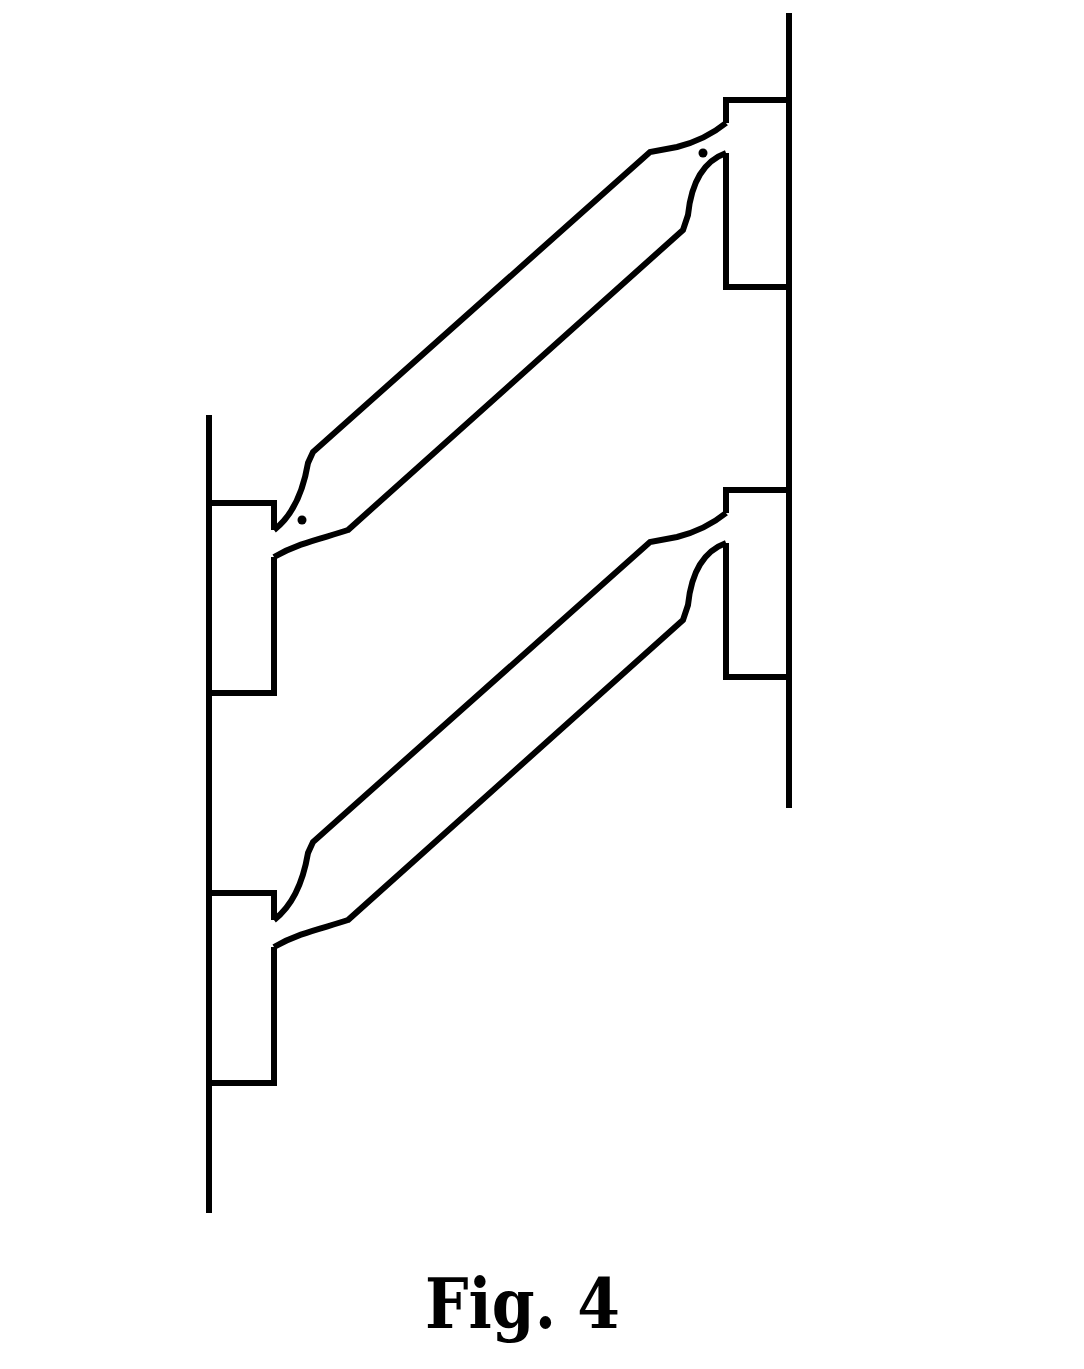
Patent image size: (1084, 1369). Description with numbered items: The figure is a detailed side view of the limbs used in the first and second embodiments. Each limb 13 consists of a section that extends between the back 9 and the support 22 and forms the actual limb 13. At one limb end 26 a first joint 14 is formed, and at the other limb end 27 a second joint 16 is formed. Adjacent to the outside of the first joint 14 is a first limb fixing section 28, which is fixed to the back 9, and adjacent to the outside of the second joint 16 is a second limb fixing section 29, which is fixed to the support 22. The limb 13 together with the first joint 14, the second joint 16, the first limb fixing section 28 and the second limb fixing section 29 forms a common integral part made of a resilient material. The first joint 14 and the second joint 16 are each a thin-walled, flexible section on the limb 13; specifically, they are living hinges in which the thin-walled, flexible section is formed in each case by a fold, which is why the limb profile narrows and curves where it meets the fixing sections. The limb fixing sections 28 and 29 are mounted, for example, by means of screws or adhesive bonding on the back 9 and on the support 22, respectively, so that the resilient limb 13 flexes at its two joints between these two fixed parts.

The back 9 is at (209, 792).
The support 22 is at (791, 392).
The limb 13 is at (512, 327).
The first joint 14 is at (302, 520).
The second joint 16 is at (703, 153).
The limb end 26 is at (263, 413).
The limb end 27 is at (608, 121).
The first limb fixing section 28 is at (237, 619).
The second limb fixing section 29 is at (755, 217).